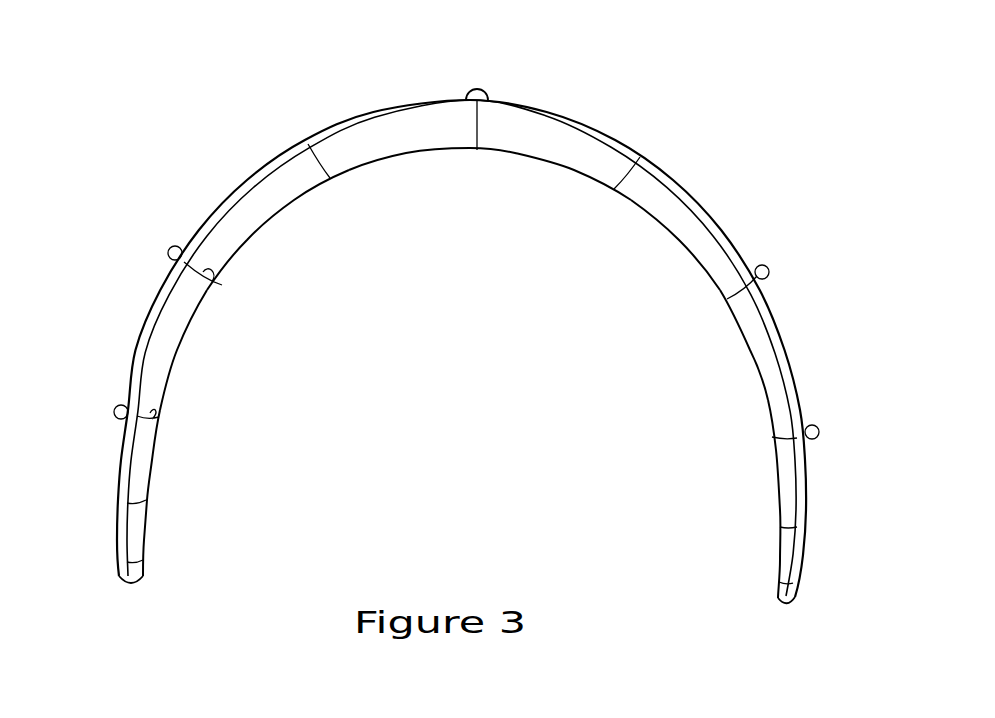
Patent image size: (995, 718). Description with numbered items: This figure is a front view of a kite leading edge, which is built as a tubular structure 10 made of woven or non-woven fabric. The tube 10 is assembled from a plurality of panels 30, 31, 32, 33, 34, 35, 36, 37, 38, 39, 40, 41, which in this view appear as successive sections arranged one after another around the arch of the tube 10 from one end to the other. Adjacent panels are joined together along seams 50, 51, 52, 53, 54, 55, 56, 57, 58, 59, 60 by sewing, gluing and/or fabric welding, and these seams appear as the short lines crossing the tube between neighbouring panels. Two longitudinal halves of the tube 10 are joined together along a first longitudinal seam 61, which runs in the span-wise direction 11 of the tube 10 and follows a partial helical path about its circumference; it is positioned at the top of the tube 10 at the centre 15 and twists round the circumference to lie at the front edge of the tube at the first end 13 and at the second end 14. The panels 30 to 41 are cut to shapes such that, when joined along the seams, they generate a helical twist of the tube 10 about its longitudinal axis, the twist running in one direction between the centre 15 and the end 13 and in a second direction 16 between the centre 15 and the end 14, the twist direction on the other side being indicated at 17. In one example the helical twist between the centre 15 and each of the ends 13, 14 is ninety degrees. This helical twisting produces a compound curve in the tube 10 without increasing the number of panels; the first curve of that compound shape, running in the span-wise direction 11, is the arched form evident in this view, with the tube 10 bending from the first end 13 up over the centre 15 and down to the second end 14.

The tubular structure 10 is at (657, 112).
The span-wise direction 11 is at (415, 513).
The first end of the tube 13 is at (782, 601).
The second end of the tube 14 is at (137, 583).
The centre of the tube 15 is at (482, 93).
The second direction 16 is at (806, 103).
The first side 17 is at (183, 116).
The panel 30 is at (147, 570).
The panel 31 is at (119, 534).
The panel 32 is at (141, 460).
The panel 33 is at (167, 355).
The panel 34 is at (243, 232).
The panel 35 is at (396, 150).
The panel 36 is at (557, 158).
The panel 37 is at (690, 249).
The panel 38 is at (750, 362).
The panel 39 is at (774, 474).
The panel 40 is at (787, 560).
The panel 41 is at (791, 596).
The seam 50 is at (122, 565).
The seam 51 is at (124, 500).
The seam 52 is at (152, 418).
The seam 53 is at (207, 273).
The seam 54 is at (312, 166).
The seam 55 is at (476, 127).
The seam 56 is at (624, 177).
The seam 57 is at (742, 290).
The seam 58 is at (773, 440).
The seam 59 is at (780, 528).
The seam 60 is at (778, 584).
The first longitudinal seam 61 is at (138, 380).